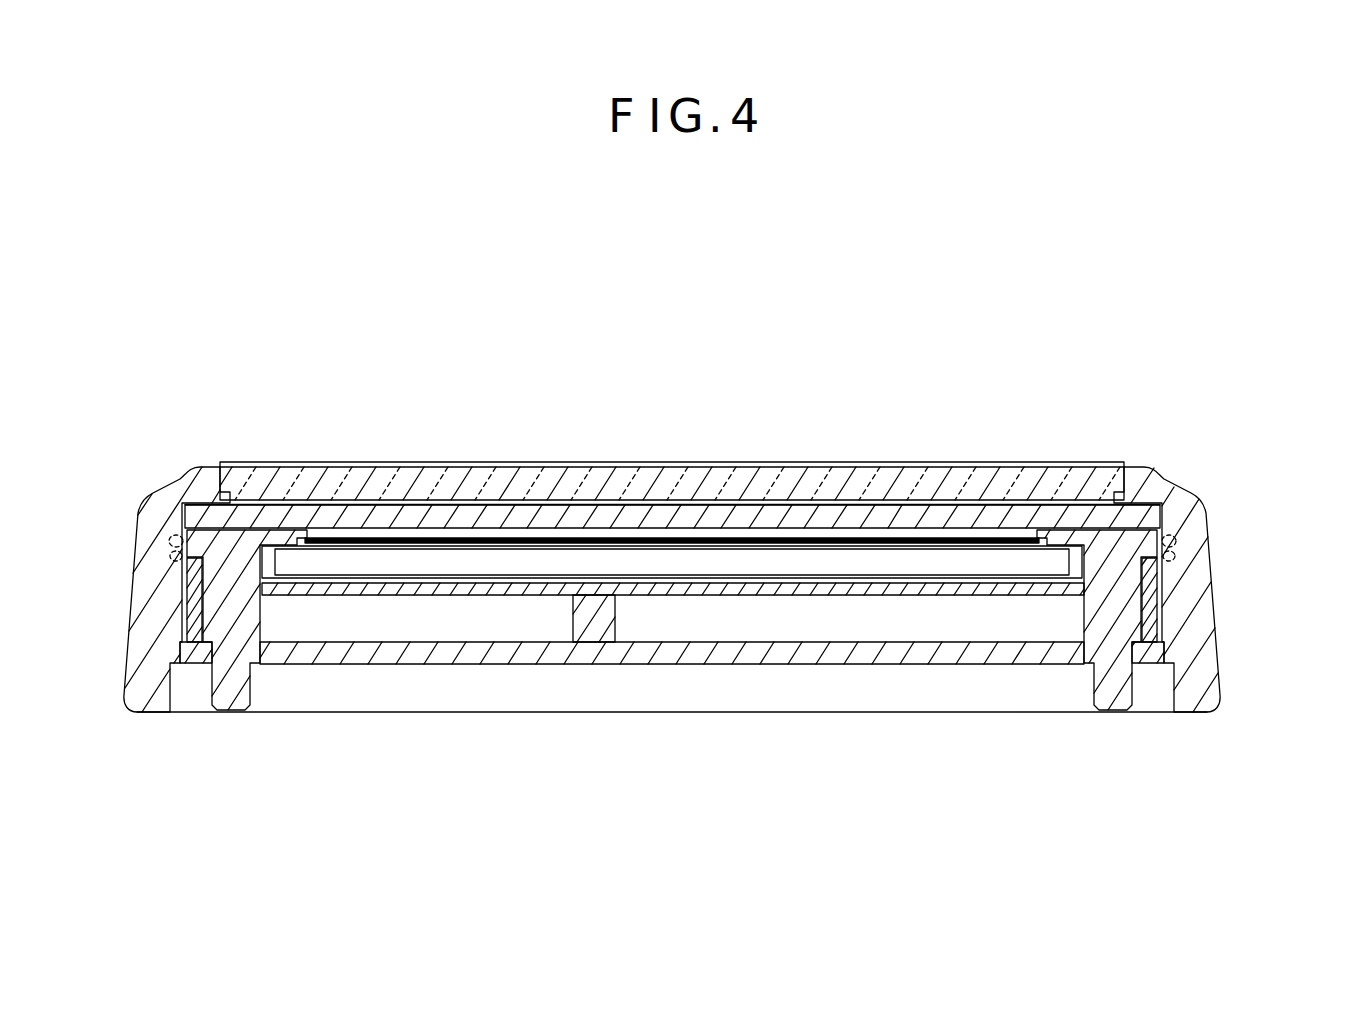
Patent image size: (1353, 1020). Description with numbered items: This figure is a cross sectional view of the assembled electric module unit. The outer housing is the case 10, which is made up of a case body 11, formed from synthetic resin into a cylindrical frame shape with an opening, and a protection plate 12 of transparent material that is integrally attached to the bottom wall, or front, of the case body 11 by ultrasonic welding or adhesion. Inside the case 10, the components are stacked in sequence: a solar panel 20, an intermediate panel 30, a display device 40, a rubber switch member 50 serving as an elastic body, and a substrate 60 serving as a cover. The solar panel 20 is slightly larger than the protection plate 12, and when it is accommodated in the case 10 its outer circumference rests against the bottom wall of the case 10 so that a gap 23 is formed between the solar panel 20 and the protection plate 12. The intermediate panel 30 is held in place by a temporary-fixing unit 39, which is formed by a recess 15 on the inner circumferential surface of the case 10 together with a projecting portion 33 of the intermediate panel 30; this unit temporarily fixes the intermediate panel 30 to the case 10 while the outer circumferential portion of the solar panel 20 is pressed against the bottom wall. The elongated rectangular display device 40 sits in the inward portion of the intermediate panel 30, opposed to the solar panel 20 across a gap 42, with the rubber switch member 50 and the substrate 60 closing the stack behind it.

The case 10 is at (283, 386).
The case body 11 is at (176, 478).
The protection plate 12 is at (277, 473).
The recess 15 is at (1176, 535).
The solar panel 20 is at (933, 511).
The gap 23 is at (822, 503).
The intermediate panel 30 is at (1128, 613).
The projecting portion 33 is at (1176, 549).
The temporary-fixing unit 39 is at (1271, 522).
The display device 40 is at (587, 553).
The gap 42 is at (722, 535).
The rubber switch member 50 is at (808, 597).
The substrate 60 is at (688, 665).